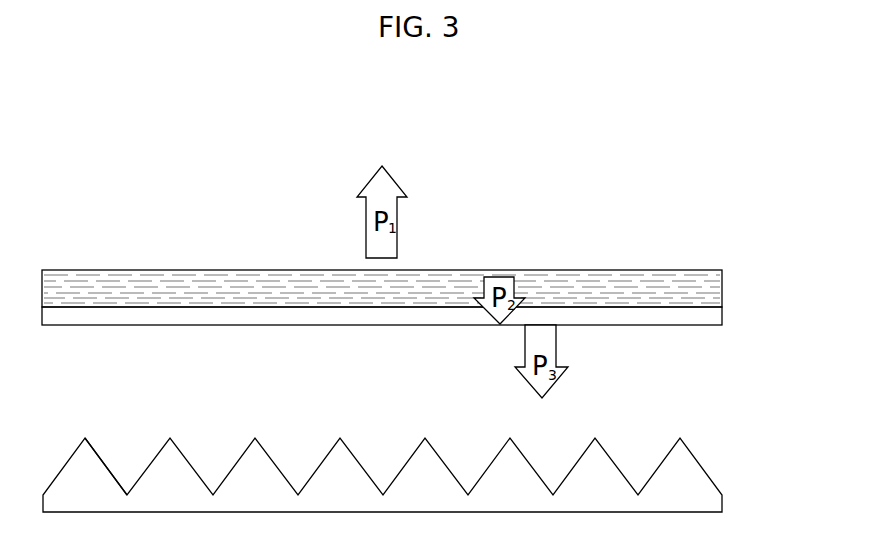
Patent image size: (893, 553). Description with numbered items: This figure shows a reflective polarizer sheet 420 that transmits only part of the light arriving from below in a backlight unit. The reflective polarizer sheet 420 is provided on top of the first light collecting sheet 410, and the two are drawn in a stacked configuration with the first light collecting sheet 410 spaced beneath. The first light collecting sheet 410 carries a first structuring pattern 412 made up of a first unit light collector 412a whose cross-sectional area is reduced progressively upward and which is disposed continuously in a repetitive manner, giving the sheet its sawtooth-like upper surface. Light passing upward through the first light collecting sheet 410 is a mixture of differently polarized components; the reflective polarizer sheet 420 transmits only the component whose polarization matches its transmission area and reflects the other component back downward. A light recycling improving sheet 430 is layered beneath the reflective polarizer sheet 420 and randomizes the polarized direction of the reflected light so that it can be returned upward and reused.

The first light collecting sheet 410 is at (432, 450).
The first structuring pattern 412 is at (687, 480).
The first unit light collector 412a is at (105, 483).
The reflective polarizer sheet 420 is at (703, 290).
The light recycling improving sheet 430 is at (700, 320).